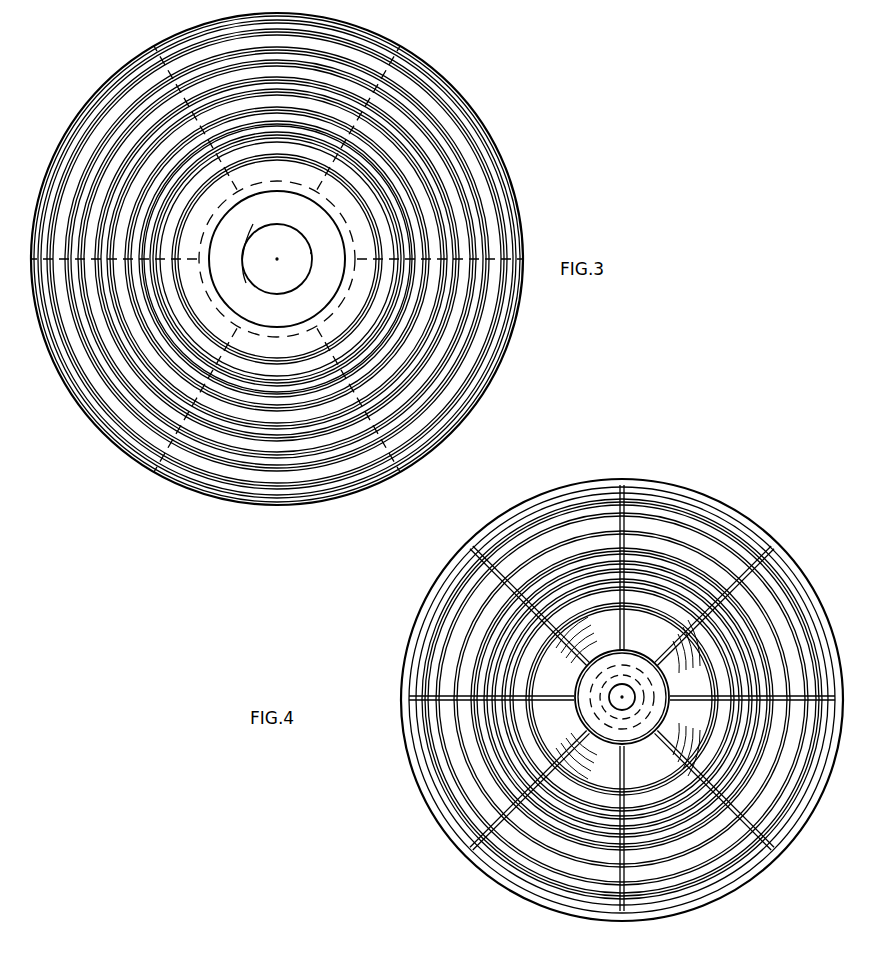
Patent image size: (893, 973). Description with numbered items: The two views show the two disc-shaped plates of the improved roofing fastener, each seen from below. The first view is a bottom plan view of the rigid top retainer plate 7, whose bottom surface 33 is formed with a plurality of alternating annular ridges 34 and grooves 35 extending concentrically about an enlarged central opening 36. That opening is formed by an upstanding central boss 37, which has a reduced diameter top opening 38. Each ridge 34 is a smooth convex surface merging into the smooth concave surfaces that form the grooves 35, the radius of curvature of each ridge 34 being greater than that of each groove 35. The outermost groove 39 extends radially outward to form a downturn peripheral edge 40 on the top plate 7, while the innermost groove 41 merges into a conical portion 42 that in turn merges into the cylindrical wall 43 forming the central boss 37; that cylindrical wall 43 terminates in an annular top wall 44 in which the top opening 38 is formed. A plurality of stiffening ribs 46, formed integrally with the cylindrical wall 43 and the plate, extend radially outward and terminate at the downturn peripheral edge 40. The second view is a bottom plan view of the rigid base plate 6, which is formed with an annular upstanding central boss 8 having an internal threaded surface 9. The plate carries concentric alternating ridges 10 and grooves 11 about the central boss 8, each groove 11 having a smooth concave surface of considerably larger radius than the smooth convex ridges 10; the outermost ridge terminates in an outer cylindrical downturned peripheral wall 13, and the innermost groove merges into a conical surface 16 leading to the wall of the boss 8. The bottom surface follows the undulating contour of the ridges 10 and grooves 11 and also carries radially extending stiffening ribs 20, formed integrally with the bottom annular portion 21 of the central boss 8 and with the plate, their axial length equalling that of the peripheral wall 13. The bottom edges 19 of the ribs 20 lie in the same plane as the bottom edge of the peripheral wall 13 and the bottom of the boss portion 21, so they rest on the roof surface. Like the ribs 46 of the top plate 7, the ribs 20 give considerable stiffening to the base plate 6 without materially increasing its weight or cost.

In FIG. 3, the top retainer plate 7 is at (170, 487).
In FIG. 3, the bottom surface 33 is at (430, 180).
In FIG. 3, the ridges 34 is at (454, 334).
In FIG. 3, the grooves 35 is at (123, 345).
In FIG. 3, the central opening 36 is at (320, 211).
In FIG. 3, the central boss 37 is at (267, 326).
In FIG. 3, the top opening 38 is at (245, 278).
In FIG. 3, the outermost groove 39 is at (108, 115).
In FIG. 3, the downturn peripheral edge 40 is at (283, 503).
In FIG. 3, the innermost groove 41 is at (305, 138).
In FIG. 3, the conical portion 42 is at (190, 215).
In FIG. 3, the cylindrical wall 43 is at (336, 264).
In FIG. 3, the annular top wall 44 is at (334, 253).
In FIG. 3, the stiffening ribs 46 is at (392, 76).
In FIG. 4, the base plate 6 is at (745, 513).
In FIG. 4, the central boss 8 is at (576, 679).
In FIG. 4, the internal threaded surface 9 is at (630, 664).
In FIG. 4, the ridges 10 is at (463, 628).
In FIG. 4, the grooves 11 is at (578, 560).
In FIG. 4, the peripheral wall 13 is at (445, 810).
In FIG. 4, the conical surface 16 is at (561, 733).
In FIG. 4, the bottom edges 19 is at (440, 705).
In FIG. 4, the stiffening ribs 20 is at (492, 585).
In FIG. 4, the bottom annular portion 21 is at (637, 733).